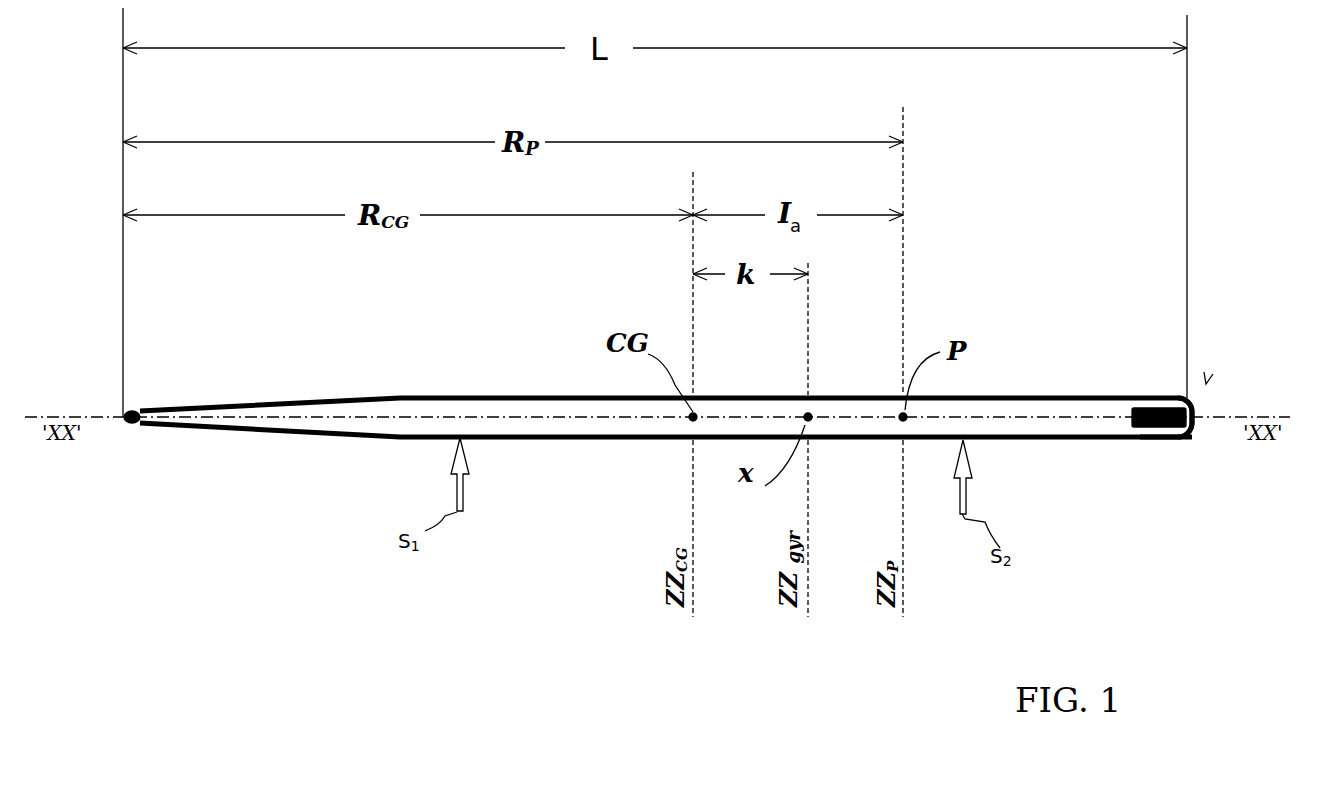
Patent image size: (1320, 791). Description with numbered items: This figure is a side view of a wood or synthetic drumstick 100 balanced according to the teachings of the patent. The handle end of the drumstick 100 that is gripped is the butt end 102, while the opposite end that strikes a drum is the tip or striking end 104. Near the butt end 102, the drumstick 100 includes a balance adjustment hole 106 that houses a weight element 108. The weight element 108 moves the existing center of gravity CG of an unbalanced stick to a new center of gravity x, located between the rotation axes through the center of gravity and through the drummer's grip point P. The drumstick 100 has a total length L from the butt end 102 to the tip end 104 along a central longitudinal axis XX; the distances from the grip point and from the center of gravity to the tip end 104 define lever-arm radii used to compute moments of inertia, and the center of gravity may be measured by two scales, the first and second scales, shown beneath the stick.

The drumstick 100 is at (413, 410).
The butt end 102 is at (1190, 398).
The tip or striking end 104 is at (123, 410).
The balance adjustment hole 106 is at (1165, 430).
The weight element 108 is at (1145, 410).